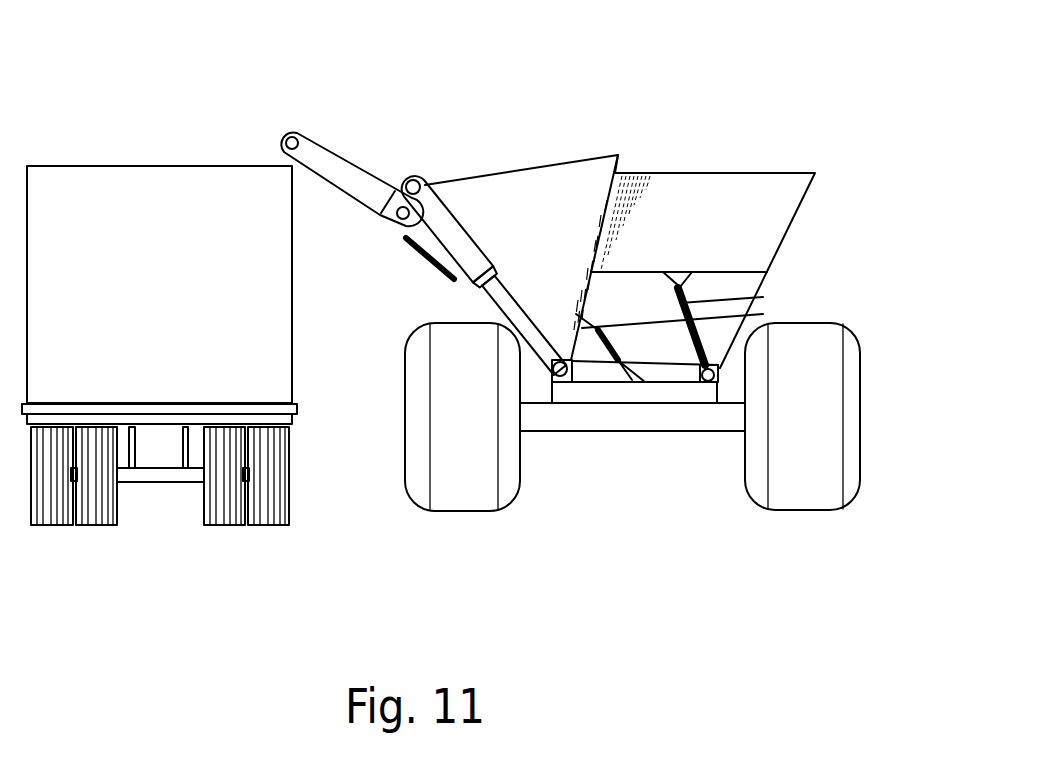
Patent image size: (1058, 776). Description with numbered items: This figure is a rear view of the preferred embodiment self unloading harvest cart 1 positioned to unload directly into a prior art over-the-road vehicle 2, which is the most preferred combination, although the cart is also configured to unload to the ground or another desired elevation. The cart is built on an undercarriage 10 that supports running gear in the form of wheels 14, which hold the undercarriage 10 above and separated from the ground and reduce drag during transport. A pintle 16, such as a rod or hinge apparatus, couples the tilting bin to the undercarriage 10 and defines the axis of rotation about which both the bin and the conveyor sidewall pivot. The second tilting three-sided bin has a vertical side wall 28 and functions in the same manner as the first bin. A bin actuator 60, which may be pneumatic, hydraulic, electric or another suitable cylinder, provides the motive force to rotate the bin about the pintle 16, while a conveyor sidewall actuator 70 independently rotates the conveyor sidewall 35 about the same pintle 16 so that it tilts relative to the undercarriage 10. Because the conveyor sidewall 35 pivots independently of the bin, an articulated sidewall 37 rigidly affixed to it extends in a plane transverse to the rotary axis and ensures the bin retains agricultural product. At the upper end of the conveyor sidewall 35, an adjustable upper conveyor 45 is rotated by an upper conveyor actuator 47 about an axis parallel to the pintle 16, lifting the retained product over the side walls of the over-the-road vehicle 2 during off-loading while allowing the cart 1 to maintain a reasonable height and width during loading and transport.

The self unloading harvest cart 1 is at (866, 54).
The over-the-road vehicle 2 is at (112, 287).
The undercarriage 10 is at (860, 518).
The wheels 14 is at (503, 488).
The pintle 16 is at (566, 372).
The vertical side wall 28 is at (782, 186).
The conveyor sidewall 35 is at (452, 230).
The articulated sidewall 37 is at (587, 174).
The adjustable upper conveyor 45 is at (316, 159).
The upper conveyor actuator 47 is at (417, 257).
The bin actuator 60 is at (763, 297).
The conveyor sidewall actuator 70 is at (763, 314).